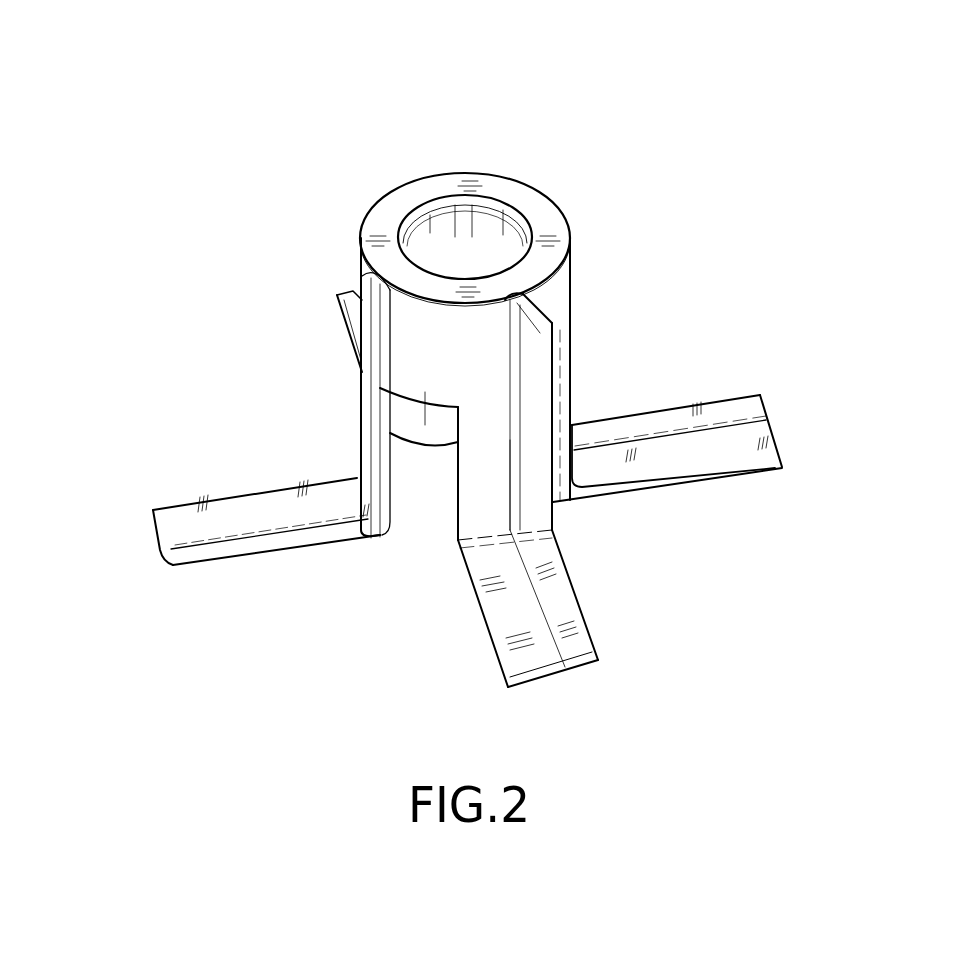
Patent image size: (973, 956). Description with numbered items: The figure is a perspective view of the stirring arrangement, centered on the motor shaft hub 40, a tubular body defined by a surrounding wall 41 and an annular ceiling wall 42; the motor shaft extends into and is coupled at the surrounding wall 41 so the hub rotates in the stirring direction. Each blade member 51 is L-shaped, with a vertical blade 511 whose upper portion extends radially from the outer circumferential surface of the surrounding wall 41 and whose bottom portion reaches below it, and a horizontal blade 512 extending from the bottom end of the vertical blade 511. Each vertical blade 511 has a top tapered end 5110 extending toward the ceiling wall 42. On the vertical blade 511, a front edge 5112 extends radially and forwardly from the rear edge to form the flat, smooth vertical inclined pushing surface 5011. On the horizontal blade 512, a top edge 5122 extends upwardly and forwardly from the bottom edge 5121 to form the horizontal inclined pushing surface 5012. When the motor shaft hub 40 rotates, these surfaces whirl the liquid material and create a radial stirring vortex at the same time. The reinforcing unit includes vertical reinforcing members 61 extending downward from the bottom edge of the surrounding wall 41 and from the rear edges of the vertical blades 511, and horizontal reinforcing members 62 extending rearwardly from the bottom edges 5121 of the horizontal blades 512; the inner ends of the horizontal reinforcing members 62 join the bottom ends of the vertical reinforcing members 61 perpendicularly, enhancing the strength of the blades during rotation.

The motor shaft hub 40 is at (528, 122).
The surrounding wall 41 is at (450, 315).
The annular ceiling wall 42 is at (522, 200).
The blade member 51 is at (738, 292).
The vertical blade 511 is at (552, 363).
The top tapered end 5110 is at (543, 293).
The vertical inclined pushing surface 5011 is at (377, 343).
The front edge 5112 is at (360, 406).
The horizontal blade 512 is at (577, 640).
The top edge 5122 is at (762, 392).
The bottom edge 5121 is at (762, 432).
The horizontal inclined pushing surface 5012 is at (263, 555).
The vertical reinforcing member 61 is at (480, 452).
The horizontal reinforcing member 62 is at (240, 512).